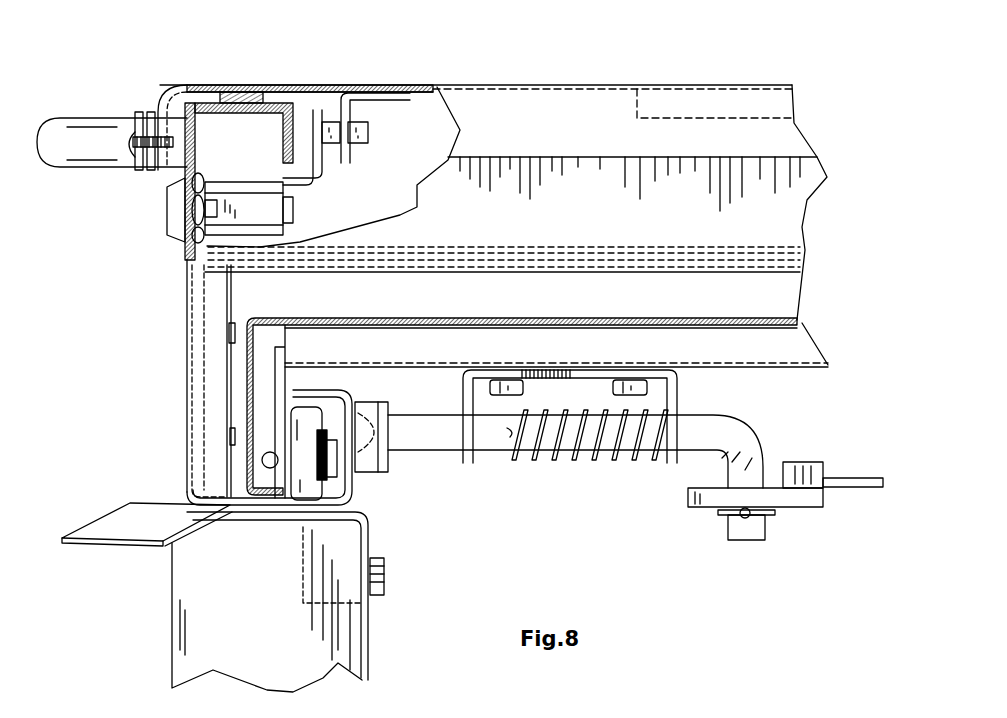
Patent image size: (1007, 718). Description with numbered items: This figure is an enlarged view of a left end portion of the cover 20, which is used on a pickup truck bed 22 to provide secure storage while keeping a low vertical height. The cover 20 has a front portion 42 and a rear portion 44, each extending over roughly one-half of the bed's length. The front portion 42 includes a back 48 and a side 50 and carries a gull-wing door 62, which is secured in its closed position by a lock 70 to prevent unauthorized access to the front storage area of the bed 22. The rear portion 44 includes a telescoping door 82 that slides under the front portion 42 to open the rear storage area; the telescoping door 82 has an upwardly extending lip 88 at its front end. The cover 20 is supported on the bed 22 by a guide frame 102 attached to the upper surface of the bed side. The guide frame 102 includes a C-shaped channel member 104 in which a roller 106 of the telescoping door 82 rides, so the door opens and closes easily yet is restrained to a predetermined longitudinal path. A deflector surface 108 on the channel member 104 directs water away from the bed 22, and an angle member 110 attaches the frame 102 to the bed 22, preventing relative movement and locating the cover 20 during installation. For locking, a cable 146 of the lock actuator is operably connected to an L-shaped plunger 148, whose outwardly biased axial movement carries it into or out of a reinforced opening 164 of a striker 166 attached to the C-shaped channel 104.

The cover 20 is at (692, 68).
The pickup truck bed 22 is at (202, 633).
The front portion 42 is at (585, 80).
The rear portion 44 is at (803, 321).
The back 48 is at (612, 211).
The side 50 is at (186, 336).
The gull-wing door 62 is at (482, 86).
The lock 70 is at (168, 210).
The telescoping door 82 is at (747, 312).
The upwardly extending lip 88 is at (473, 245).
The guide frame 102 is at (372, 508).
The C-shaped channel member 104 is at (350, 484).
The roller 106 is at (307, 427).
The deflector surface 108 is at (117, 520).
The angle member 110 is at (366, 534).
The cable 146 is at (847, 488).
The L-shaped plunger 148 is at (567, 438).
The reinforced opening 164 is at (387, 433).
The striker 166 is at (370, 402).